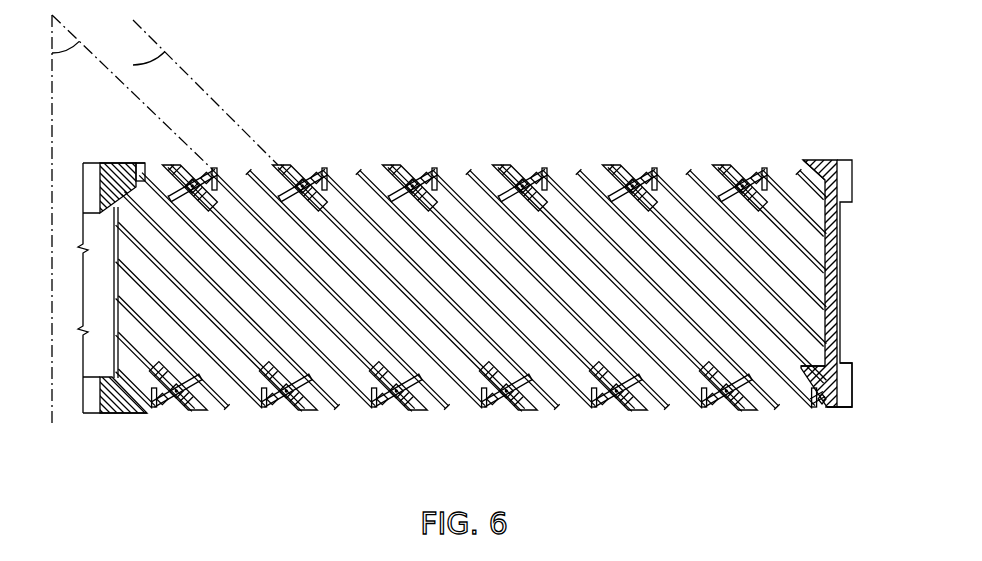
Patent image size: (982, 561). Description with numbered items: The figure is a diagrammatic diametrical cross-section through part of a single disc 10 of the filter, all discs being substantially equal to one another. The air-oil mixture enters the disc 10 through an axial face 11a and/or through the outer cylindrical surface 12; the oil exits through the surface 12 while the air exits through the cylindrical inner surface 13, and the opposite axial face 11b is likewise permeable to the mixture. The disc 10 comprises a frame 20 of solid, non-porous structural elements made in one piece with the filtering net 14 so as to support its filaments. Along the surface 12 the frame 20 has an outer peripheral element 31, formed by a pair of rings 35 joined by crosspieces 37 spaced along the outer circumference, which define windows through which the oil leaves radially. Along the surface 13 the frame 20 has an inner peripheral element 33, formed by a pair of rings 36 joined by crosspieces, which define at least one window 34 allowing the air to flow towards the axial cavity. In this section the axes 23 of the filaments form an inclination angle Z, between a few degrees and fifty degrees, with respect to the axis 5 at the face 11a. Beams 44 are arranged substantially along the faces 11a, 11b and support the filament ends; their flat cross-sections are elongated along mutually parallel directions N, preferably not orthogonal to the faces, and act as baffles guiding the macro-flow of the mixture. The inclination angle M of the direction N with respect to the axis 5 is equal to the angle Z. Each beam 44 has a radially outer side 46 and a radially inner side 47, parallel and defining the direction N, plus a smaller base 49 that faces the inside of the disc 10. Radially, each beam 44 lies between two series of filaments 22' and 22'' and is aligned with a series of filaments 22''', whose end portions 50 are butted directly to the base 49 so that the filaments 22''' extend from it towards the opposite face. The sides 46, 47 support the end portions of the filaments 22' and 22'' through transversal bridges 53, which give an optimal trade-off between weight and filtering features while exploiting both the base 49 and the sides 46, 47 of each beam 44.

The axis 5 is at (54, 420).
The axes of the filaments 23 is at (107, 66).
The inclination angle Z is at (65, 55).
The inclination angle M is at (149, 65).
The direction N is at (234, 103).
The disc 10 is at (768, 124).
The inner peripheral element 33 is at (103, 420).
The rings 36 is at (117, 167).
The window 34 is at (108, 246).
The inner surface 13 is at (106, 298).
The crosspieces 37 is at (838, 242).
The outer cylindrical surface 12 is at (846, 296).
The outer peripheral element 31 is at (860, 413).
The frame 20 is at (830, 418).
The rings 35 is at (818, 157).
The series of filaments 22'' is at (579, 242).
The filtering net 14 is at (585, 414).
The series of filaments 22' is at (660, 270).
The end portions 50 is at (574, 247).
The axial face 11a is at (420, 155).
The beams 44 is at (512, 165).
The side 46 is at (526, 165).
The side 47 is at (485, 174).
The bridges 53 is at (518, 207).
The base 49 is at (540, 216).
The series of filaments 22''' is at (581, 151).
The axial face 11b is at (692, 420).